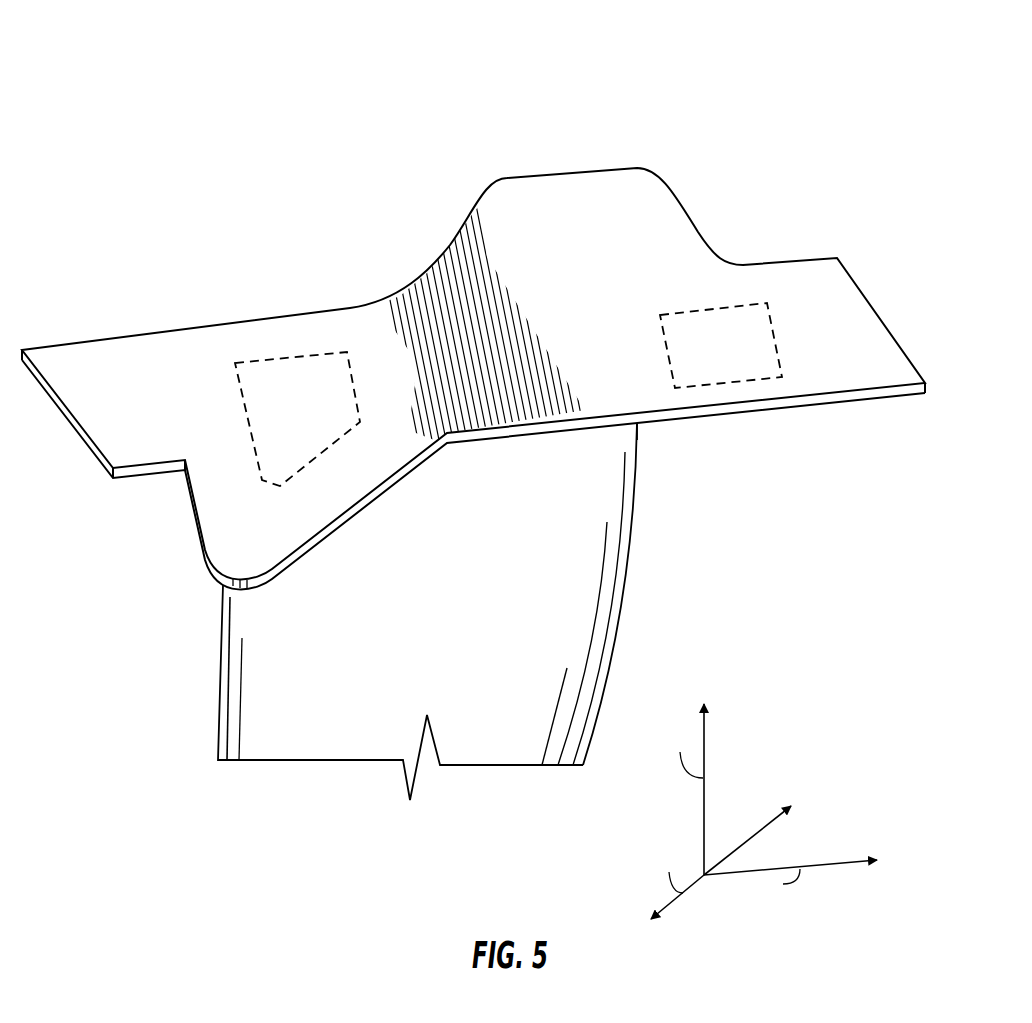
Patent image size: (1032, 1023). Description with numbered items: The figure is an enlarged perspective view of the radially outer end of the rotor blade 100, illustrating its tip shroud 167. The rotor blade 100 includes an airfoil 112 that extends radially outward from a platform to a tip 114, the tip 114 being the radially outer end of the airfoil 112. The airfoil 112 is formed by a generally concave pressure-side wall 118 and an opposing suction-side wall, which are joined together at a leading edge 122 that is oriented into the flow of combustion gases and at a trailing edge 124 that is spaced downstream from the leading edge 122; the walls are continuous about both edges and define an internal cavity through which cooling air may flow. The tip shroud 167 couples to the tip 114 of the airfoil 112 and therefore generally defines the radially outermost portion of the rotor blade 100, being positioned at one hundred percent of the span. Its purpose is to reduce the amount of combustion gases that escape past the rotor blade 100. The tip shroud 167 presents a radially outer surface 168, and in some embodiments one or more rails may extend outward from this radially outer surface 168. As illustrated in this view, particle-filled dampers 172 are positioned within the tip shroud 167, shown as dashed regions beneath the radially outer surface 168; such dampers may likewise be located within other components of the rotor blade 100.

The rotor blade 100 is at (178, 108).
The airfoil 112 is at (577, 620).
The tip 114 is at (643, 425).
The pressure-side wall 118 is at (496, 568).
The leading edge 122 is at (219, 681).
The trailing edge 124 is at (633, 533).
The tip shroud 167 is at (385, 196).
The radially outer surface 168 is at (534, 313).
The particle-filled dampers 172 is at (291, 380).